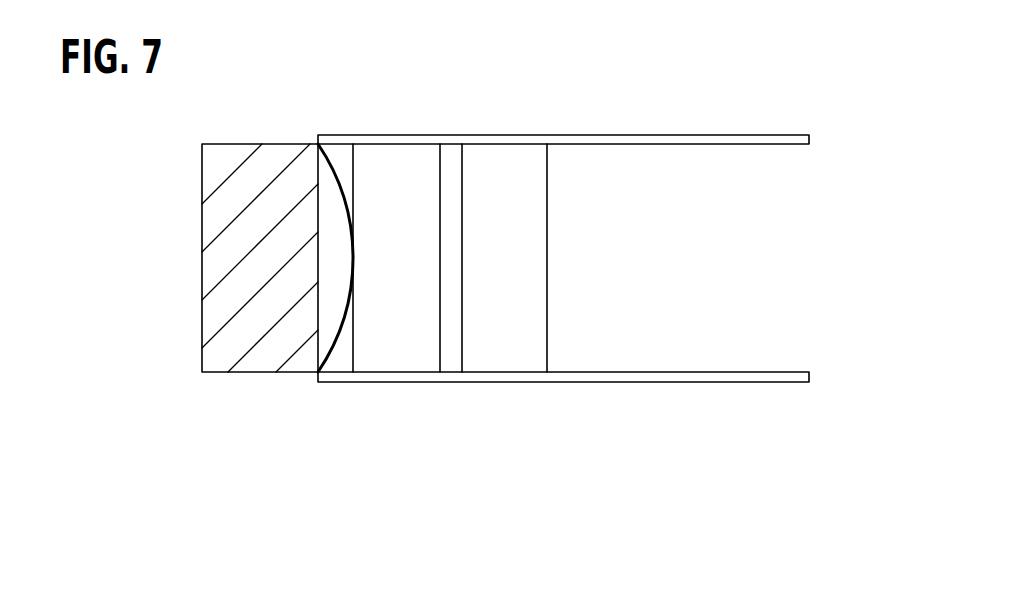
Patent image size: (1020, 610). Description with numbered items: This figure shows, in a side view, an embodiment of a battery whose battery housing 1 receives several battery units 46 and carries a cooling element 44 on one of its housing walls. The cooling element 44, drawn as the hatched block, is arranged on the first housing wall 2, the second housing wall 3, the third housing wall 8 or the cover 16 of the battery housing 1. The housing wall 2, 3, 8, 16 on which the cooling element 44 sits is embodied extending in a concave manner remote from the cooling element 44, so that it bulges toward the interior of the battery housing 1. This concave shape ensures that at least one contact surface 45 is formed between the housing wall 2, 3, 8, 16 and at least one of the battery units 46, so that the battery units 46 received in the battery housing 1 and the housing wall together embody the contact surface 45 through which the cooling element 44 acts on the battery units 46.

The battery housing 1 is at (628, 396).
The first housing wall 2 is at (347, 219).
The second housing wall 3 is at (347, 219).
The third housing wall 8 is at (347, 219).
The cover 16 is at (340, 166).
The cooling element 44 is at (257, 270).
The contact surface 45 is at (355, 258).
The battery unit 46 is at (412, 326).